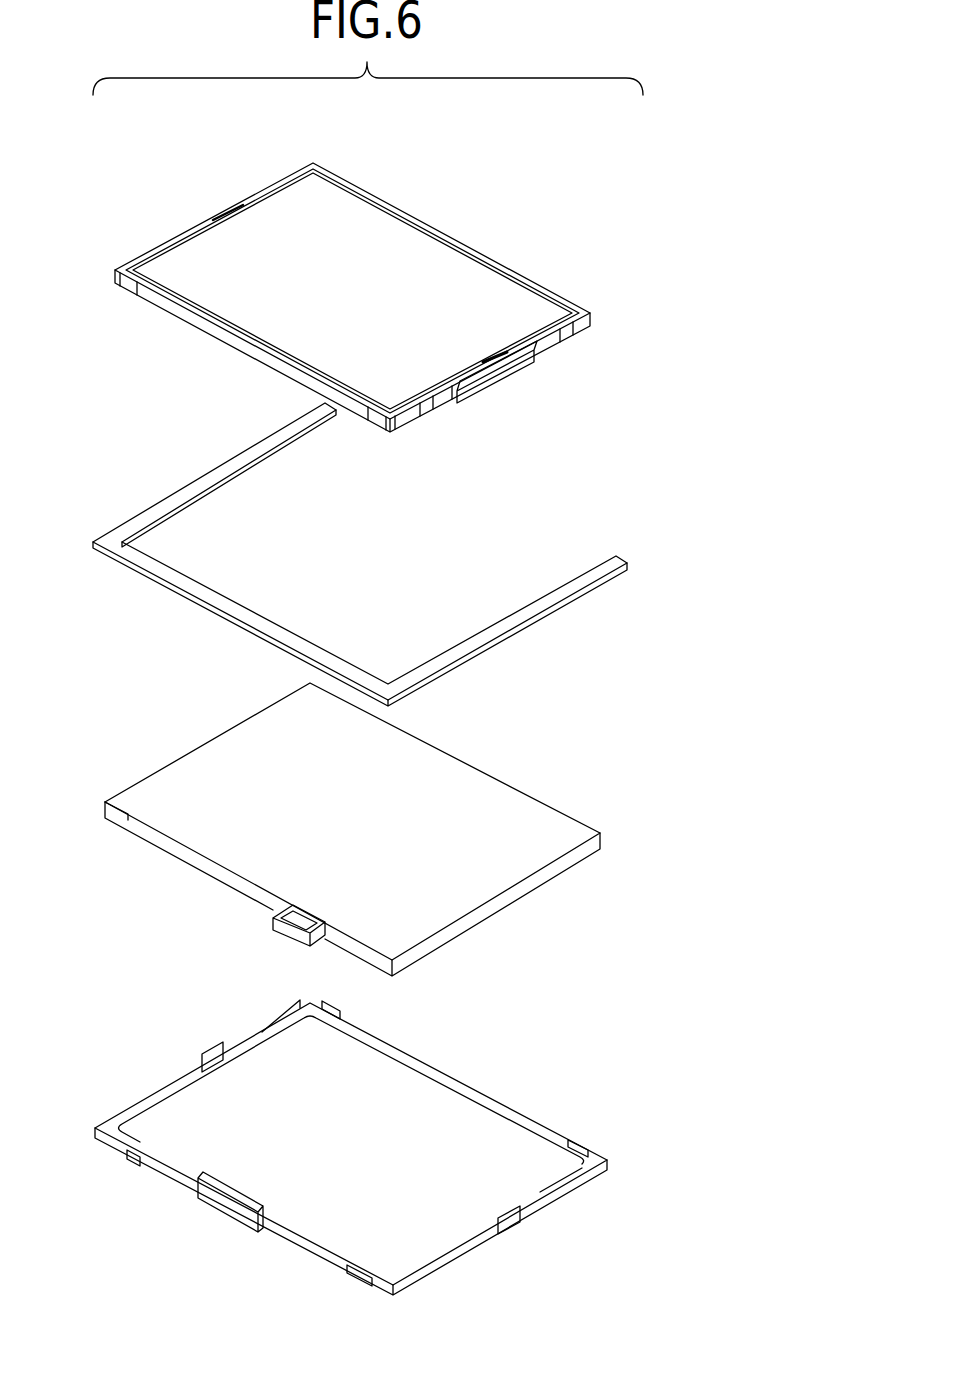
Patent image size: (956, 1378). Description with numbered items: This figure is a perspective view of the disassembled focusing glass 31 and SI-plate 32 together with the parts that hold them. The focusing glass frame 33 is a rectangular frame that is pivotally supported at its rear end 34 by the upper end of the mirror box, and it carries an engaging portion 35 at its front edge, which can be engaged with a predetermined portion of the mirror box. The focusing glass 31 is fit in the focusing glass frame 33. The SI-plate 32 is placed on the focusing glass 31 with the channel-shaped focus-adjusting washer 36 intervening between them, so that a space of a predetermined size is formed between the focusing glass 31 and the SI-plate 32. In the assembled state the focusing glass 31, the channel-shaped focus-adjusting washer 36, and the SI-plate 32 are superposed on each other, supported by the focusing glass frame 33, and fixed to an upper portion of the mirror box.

The focusing glass 31 is at (458, 760).
The SI-plate 32 is at (460, 240).
The focusing glass frame 33 is at (377, 1160).
The rear end 34 is at (608, 1162).
The engaging portion 35 is at (227, 1193).
The channel-shaped focus-adjusting washer 36 is at (160, 577).